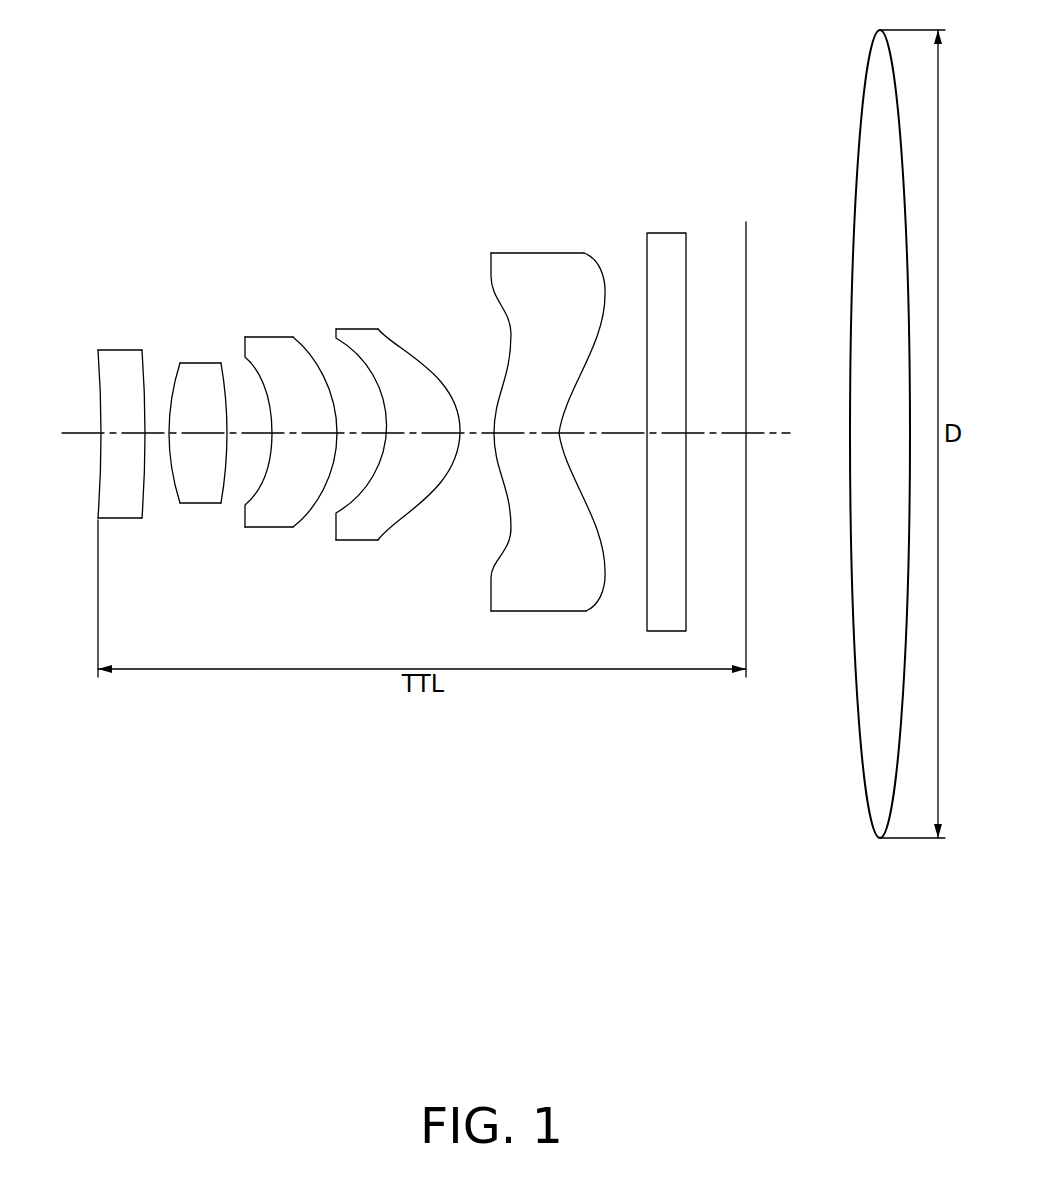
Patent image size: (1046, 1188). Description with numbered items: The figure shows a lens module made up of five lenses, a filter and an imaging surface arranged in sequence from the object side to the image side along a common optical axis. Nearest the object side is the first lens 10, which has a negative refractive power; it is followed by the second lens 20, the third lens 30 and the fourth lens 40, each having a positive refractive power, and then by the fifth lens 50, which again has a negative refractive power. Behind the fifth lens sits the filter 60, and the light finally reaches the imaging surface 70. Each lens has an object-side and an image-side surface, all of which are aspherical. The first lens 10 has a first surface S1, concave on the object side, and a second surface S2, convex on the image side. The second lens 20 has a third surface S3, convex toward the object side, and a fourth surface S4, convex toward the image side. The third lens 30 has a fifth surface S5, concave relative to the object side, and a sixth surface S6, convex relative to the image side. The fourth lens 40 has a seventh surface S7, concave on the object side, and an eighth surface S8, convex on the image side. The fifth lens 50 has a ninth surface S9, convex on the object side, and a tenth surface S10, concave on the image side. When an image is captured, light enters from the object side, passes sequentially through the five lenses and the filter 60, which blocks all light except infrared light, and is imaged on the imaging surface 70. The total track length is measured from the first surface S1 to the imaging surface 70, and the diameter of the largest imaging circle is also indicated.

The first lens 10 is at (107, 428).
The second lens 20 is at (194, 392).
The third lens 30 is at (276, 431).
The fourth lens 40 is at (380, 398).
The fifth lens 50 is at (543, 417).
The filter 60 is at (671, 247).
The imaging surface 70 is at (746, 274).
The first surface S1 is at (96, 468).
The second surface S2 is at (147, 478).
The third surface S3 is at (173, 400).
The fourth surface S4 is at (230, 403).
The fifth surface S5 is at (270, 458).
The sixth surface S6 is at (338, 457).
The seventh surface S7 is at (344, 361).
The eighth surface S8 is at (447, 392).
The ninth surface S9 is at (495, 474).
The tenth surface S10 is at (591, 497).